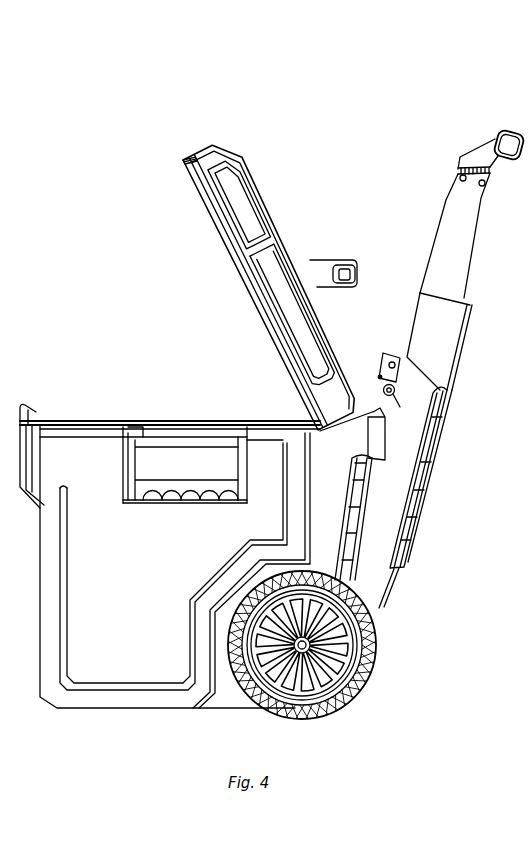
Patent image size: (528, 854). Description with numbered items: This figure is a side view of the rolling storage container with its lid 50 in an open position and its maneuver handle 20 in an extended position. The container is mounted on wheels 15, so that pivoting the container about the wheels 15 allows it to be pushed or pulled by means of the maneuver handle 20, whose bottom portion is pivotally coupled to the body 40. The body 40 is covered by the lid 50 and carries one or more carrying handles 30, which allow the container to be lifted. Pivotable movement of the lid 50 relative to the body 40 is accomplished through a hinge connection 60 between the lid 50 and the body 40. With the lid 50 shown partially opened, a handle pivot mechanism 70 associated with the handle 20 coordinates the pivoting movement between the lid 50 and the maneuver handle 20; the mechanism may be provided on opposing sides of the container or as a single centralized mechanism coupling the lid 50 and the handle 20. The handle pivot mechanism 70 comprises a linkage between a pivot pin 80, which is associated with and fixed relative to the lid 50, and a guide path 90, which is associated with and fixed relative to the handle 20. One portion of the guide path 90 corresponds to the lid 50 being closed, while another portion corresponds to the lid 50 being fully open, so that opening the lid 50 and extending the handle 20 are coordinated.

The wheels 15 is at (342, 688).
The maneuver handle 20 is at (446, 347).
The carrying handles 30 is at (224, 492).
The body 40 is at (110, 498).
The lid 50 is at (243, 213).
The hinge connection 60 is at (386, 497).
The handle pivot mechanism 70 is at (377, 368).
The pivot pin 80 is at (397, 398).
The guide path 90 is at (392, 362).